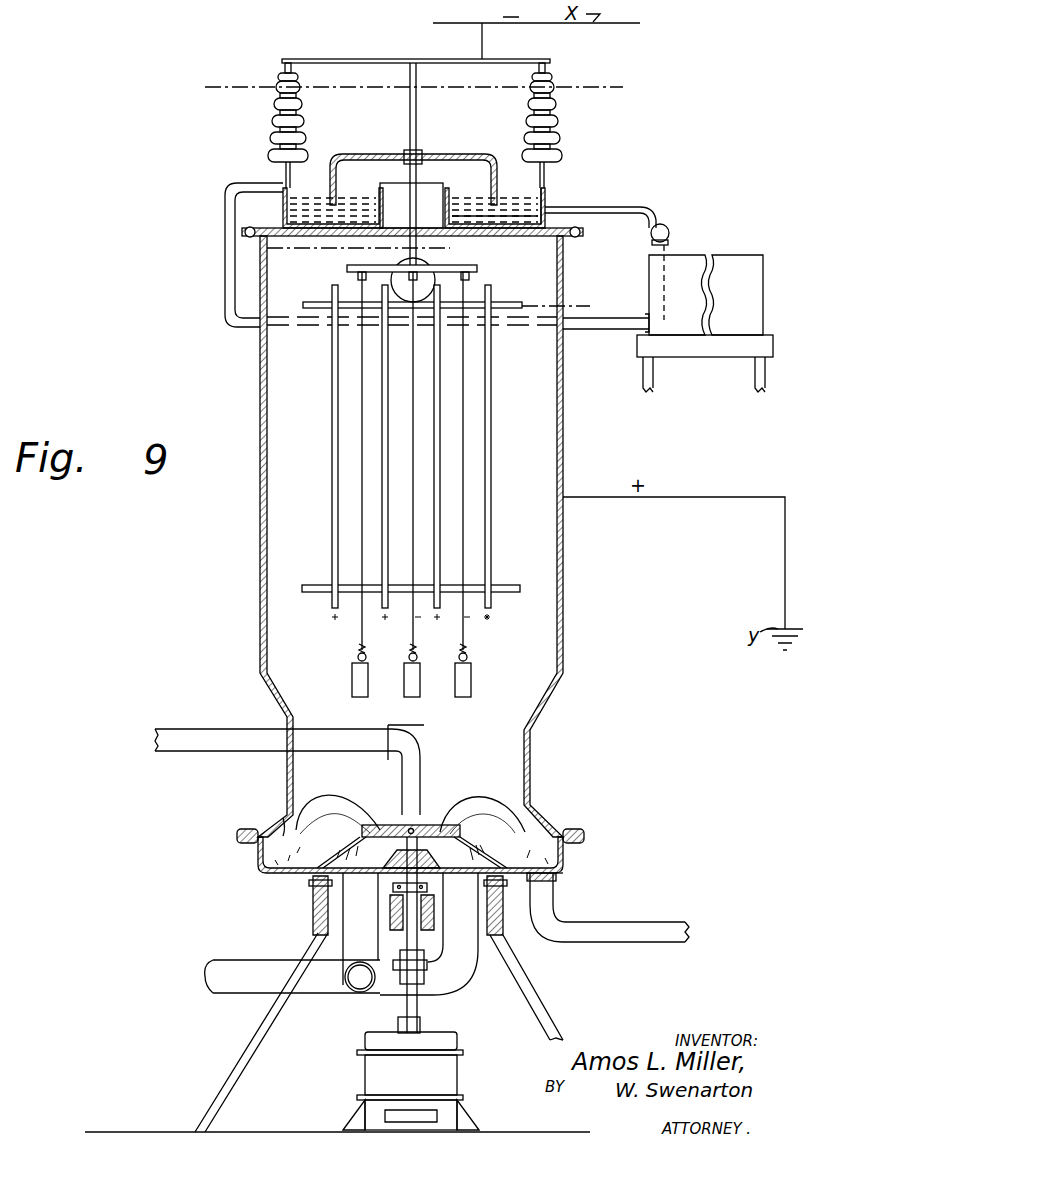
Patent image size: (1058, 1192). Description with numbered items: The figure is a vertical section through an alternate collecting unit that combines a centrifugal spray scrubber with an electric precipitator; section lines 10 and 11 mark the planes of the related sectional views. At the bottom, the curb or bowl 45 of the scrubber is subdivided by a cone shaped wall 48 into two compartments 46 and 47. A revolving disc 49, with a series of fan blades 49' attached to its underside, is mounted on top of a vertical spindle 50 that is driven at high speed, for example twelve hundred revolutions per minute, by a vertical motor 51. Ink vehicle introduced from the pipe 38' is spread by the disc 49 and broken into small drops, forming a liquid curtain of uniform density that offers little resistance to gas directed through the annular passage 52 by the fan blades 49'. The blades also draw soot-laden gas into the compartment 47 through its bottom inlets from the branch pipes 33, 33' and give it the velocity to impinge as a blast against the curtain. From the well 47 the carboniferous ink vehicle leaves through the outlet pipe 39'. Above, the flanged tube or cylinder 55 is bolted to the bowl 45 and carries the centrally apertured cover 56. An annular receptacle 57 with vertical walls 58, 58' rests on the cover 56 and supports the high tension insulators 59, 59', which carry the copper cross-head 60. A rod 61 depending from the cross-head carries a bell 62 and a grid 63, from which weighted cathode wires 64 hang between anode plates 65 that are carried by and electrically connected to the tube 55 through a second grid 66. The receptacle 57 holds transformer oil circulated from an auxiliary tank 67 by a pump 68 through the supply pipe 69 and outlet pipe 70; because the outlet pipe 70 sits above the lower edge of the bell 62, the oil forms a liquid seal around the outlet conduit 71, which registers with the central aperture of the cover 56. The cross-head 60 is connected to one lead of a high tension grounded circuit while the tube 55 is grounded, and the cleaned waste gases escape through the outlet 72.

The section line 10- 10 is at (584, 305).
The section line 11- 11 is at (627, 95).
The branch pipe 33 is at (292, 962).
The branch pipe 33' is at (347, 994).
The pipe 38' is at (289, 770).
The outlet pipe 39' is at (608, 907).
The curb or bowl 45 is at (563, 866).
The compartment 46 is at (492, 853).
The compartment 47 is at (365, 853).
The cone shaped wall 48 is at (258, 858).
The revolving disc 49 is at (313, 799).
The fan blades 49' is at (477, 809).
The vertical spindle 50 is at (403, 943).
The vertical motor 51 is at (437, 1068).
The annular passage 52 is at (283, 816).
The tube or cylinder 55 is at (563, 640).
The cover 56 is at (285, 236).
The annular receptacle 57 is at (508, 224).
The vertical wall 58 is at (572, 190).
The vertical wall 58' is at (414, 195).
The high tension insulator 59 is at (565, 125).
The high tension insulator 59' is at (310, 125).
The cross-head 60 is at (375, 60).
The rod 61 is at (418, 112).
The bell 62 is at (368, 157).
The grid 63 is at (477, 268).
The weighted cathode wires 64 is at (452, 388).
The anode plates 65 is at (365, 497).
The second grid 66 is at (508, 302).
The auxiliary tank 67 is at (735, 268).
The float 68 is at (668, 228).
The supply pipe 69 is at (628, 203).
The outlet pipe 70 is at (225, 258).
The outlet conduit 71 is at (427, 197).
The outlet 72 is at (425, 264).